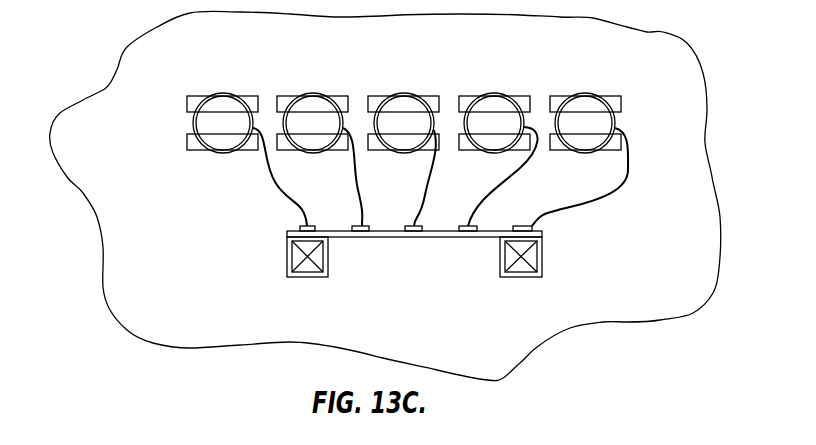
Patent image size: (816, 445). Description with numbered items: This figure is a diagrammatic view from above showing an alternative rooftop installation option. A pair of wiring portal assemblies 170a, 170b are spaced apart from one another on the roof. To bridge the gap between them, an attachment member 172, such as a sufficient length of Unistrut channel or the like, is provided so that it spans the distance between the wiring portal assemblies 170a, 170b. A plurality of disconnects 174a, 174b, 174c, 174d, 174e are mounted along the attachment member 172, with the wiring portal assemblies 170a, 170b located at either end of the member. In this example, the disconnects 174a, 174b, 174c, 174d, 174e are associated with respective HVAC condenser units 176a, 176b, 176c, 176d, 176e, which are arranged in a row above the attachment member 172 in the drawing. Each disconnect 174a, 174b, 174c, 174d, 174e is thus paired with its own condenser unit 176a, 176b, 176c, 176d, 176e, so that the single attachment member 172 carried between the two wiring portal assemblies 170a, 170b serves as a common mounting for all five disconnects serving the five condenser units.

The wiring portal assembly 170a is at (328, 257).
The wiring portal assembly 170b is at (542, 256).
The attachment member 172 is at (437, 240).
The disconnect 174a is at (317, 226).
The disconnect 174b is at (370, 227).
The disconnect 174c is at (435, 226).
The disconnect 174d is at (485, 228).
The disconnect 174e is at (532, 227).
The HVAC condenser unit 176a is at (213, 93).
The HVAC condenser unit 176b is at (312, 92).
The HVAC condenser unit 176c is at (403, 90).
The HVAC condenser unit 176d is at (487, 92).
The HVAC condenser unit 176e is at (592, 92).